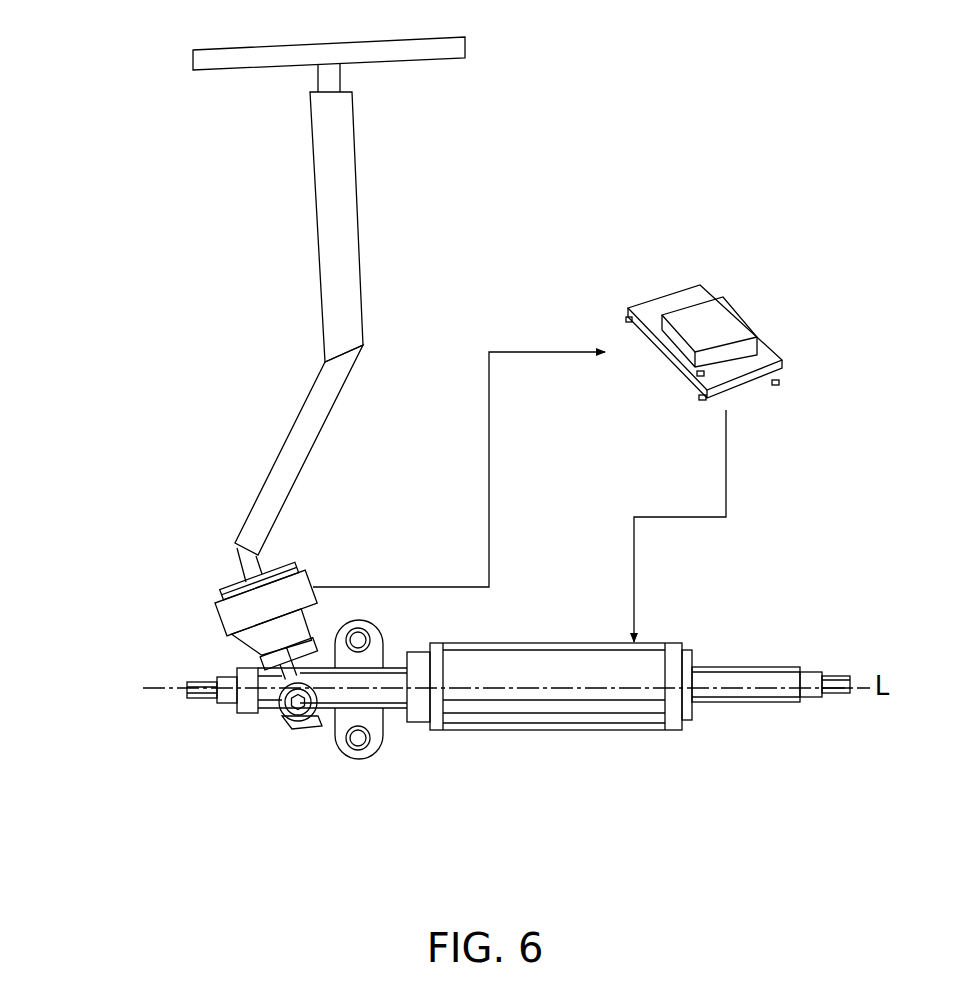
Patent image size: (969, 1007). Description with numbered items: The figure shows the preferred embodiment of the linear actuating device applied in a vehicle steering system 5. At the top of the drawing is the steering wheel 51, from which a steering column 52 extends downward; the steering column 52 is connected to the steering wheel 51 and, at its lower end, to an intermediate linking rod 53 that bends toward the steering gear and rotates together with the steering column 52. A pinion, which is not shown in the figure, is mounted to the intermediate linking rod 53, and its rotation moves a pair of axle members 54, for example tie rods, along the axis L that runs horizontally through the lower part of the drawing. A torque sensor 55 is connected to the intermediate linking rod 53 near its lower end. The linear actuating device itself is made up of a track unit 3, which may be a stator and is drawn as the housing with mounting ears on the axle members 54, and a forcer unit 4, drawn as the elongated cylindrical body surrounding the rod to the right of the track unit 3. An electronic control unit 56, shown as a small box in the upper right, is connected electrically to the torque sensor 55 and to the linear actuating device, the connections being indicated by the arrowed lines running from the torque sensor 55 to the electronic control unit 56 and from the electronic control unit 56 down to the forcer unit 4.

The track unit 3 is at (336, 755).
The forcer unit 4 is at (748, 656).
The vehicle steering system 5 is at (173, 44).
The steering wheel 51 is at (220, 72).
The steering column 52 is at (358, 217).
The intermediate linking rod 53 is at (283, 448).
The axle members 54 is at (203, 695).
The torque sensor 55 is at (215, 620).
The electronic control unit 56 is at (745, 318).